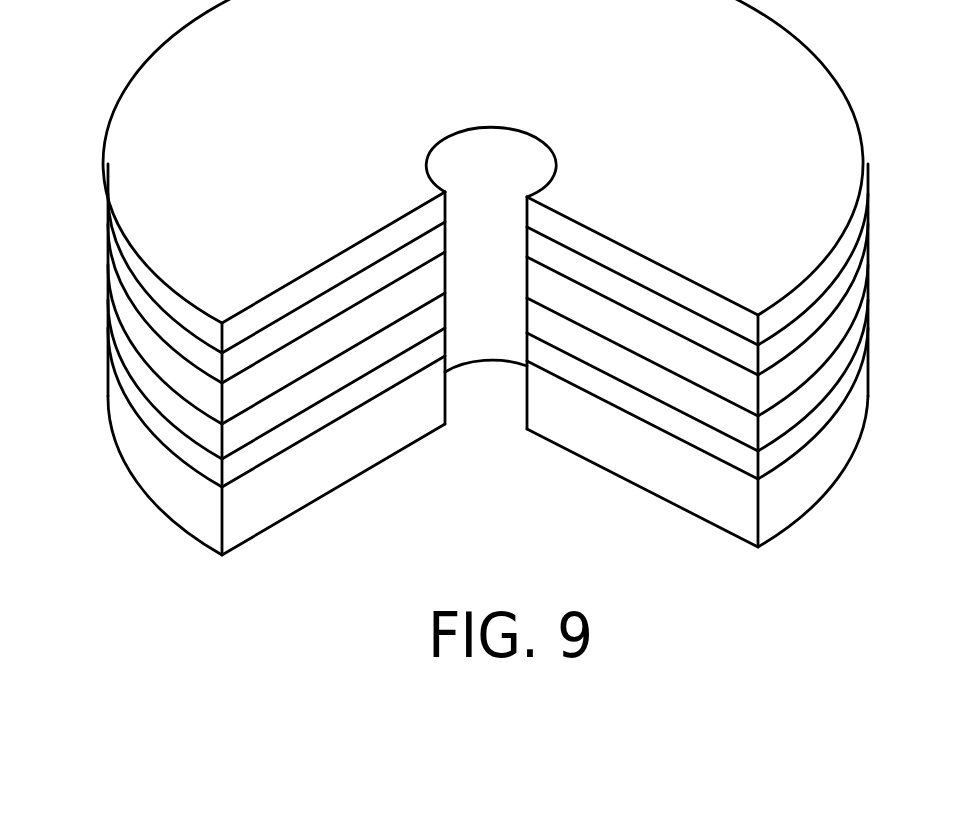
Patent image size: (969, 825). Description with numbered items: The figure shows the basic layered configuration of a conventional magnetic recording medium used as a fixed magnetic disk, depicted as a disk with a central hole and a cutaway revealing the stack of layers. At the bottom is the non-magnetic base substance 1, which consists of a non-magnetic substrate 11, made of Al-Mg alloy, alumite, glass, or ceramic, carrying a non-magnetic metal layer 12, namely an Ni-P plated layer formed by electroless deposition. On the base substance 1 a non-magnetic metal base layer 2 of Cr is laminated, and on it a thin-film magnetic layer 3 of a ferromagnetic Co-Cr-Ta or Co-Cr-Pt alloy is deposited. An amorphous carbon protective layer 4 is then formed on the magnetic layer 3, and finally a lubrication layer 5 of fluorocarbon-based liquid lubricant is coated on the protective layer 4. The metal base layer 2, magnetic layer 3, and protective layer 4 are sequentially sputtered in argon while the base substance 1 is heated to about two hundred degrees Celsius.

The non-magnetic base substance 1 is at (488, 518).
The non-magnetic substrate 11 is at (274, 510).
The non-magnetic metal layer 12 is at (258, 455).
The non-magnetic metal base layer 2 is at (238, 436).
The magnetic layer 3 is at (234, 398).
The protective layer 4 is at (240, 362).
The lubrication layer 5 is at (242, 333).